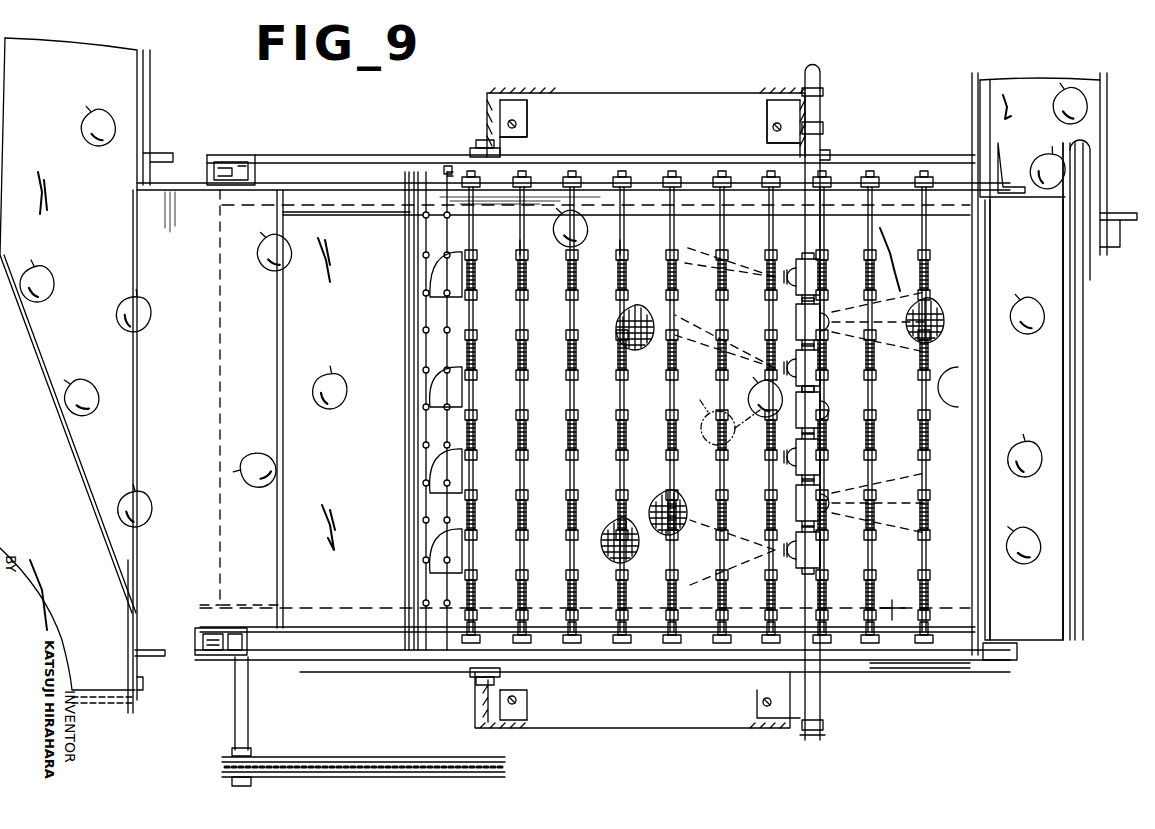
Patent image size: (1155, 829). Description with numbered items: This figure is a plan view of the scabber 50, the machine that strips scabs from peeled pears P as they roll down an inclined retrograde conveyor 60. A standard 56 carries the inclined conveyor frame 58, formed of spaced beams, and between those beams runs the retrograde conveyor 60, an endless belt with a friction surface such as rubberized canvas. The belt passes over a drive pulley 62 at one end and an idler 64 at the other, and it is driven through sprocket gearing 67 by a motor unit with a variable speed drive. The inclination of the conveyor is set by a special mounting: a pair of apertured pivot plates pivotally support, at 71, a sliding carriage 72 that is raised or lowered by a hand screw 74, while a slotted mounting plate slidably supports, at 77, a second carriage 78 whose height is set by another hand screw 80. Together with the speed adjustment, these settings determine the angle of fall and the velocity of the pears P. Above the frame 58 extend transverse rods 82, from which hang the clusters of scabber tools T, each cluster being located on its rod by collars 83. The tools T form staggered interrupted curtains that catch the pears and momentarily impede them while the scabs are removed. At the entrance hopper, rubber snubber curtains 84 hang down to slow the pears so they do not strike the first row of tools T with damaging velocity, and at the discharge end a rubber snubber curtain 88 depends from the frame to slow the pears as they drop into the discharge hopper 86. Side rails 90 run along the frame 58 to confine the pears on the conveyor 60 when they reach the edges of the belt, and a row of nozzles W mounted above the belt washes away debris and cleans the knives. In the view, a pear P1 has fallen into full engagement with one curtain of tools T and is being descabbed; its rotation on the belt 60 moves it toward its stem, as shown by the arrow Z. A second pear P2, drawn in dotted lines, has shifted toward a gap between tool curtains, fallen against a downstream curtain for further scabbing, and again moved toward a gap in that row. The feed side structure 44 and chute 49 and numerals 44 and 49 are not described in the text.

The feed hopper 44 is at (124, 90).
The inclined chute 49 is at (96, 472).
The scabber 50 is at (282, 153).
The standard 56 is at (992, 112).
The inclined conveyor frame 58 is at (905, 662).
The retrograde conveyor 60 is at (353, 343).
The drive pulley 62 is at (205, 606).
The idler 64 is at (892, 614).
The sprocket gearing 67 is at (375, 760).
The pivot 71 is at (832, 152).
The sliding carriage 72 is at (770, 120).
The hand screw 74 is at (773, 128).
The slide 77 is at (480, 153).
The carriage 78 is at (527, 135).
The hand screw 80 is at (517, 122).
The transverse rods 82 is at (922, 192).
The collars 83 is at (568, 460).
The rubber snubber curtains 84 is at (440, 268).
The discharge hopper 86 is at (1046, 417).
The rubber snubber curtain 88 is at (990, 374).
The side rails 90 is at (650, 205).
The pears P is at (115, 310).
The pear P1 is at (650, 500).
The pear P2 is at (760, 392).
The scabber tools T is at (480, 335).
The nozzles W is at (835, 313).
The arrow Z is at (616, 528).